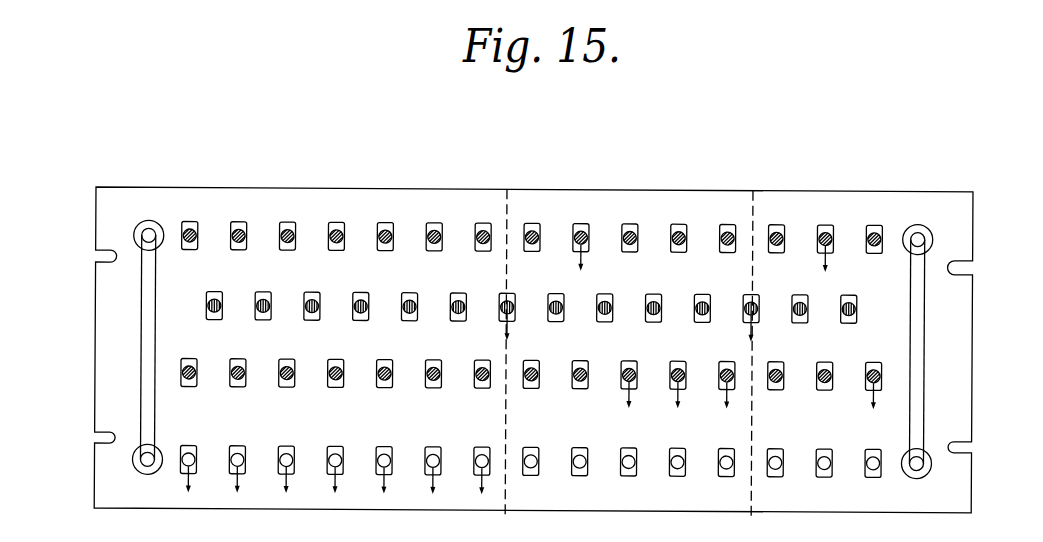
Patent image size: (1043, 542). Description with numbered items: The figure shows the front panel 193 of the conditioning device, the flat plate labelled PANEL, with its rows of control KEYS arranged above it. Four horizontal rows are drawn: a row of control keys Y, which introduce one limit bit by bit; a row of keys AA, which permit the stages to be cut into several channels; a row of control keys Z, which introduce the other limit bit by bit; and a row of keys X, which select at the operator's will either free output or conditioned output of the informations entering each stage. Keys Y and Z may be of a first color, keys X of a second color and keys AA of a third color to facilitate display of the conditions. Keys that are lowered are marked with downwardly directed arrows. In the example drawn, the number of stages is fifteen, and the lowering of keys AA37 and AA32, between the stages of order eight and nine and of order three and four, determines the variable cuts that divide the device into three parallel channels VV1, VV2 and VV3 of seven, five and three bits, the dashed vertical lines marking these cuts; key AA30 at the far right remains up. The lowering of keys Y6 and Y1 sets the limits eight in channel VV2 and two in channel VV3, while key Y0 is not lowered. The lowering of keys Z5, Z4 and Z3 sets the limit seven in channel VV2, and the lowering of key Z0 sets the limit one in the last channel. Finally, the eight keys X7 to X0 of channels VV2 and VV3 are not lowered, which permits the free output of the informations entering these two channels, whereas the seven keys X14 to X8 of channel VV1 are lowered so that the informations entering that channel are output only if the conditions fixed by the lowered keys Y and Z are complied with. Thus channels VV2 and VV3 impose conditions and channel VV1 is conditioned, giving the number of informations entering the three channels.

The front panel 193 is at (236, 200).
The front panel PANEL is at (562, 335).
The control keys KEYS is at (312, 301).
The control keys Y is at (210, 235).
The keys AA is at (237, 305).
The control keys Z is at (205, 372).
The keys X is at (200, 459).
The channel VV1 is at (350, 200).
The channel VV2 is at (615, 203).
The channel VV3 is at (848, 203).
The key Y6 is at (584, 238).
The key Y1 is at (828, 237).
The key Y0 is at (878, 237).
The key AA87 AA37 is at (511, 303).
The key AA32 is at (755, 303).
The key AA30 is at (856, 306).
The key Z5 is at (632, 370).
The key Z4 is at (681, 370).
The key Z3 is at (730, 370).
The key Z0 is at (877, 370).
The key X14 is at (194, 457).
The key X8 is at (483, 457).
The key X7 is at (533, 457).
The key X0 is at (874, 461).